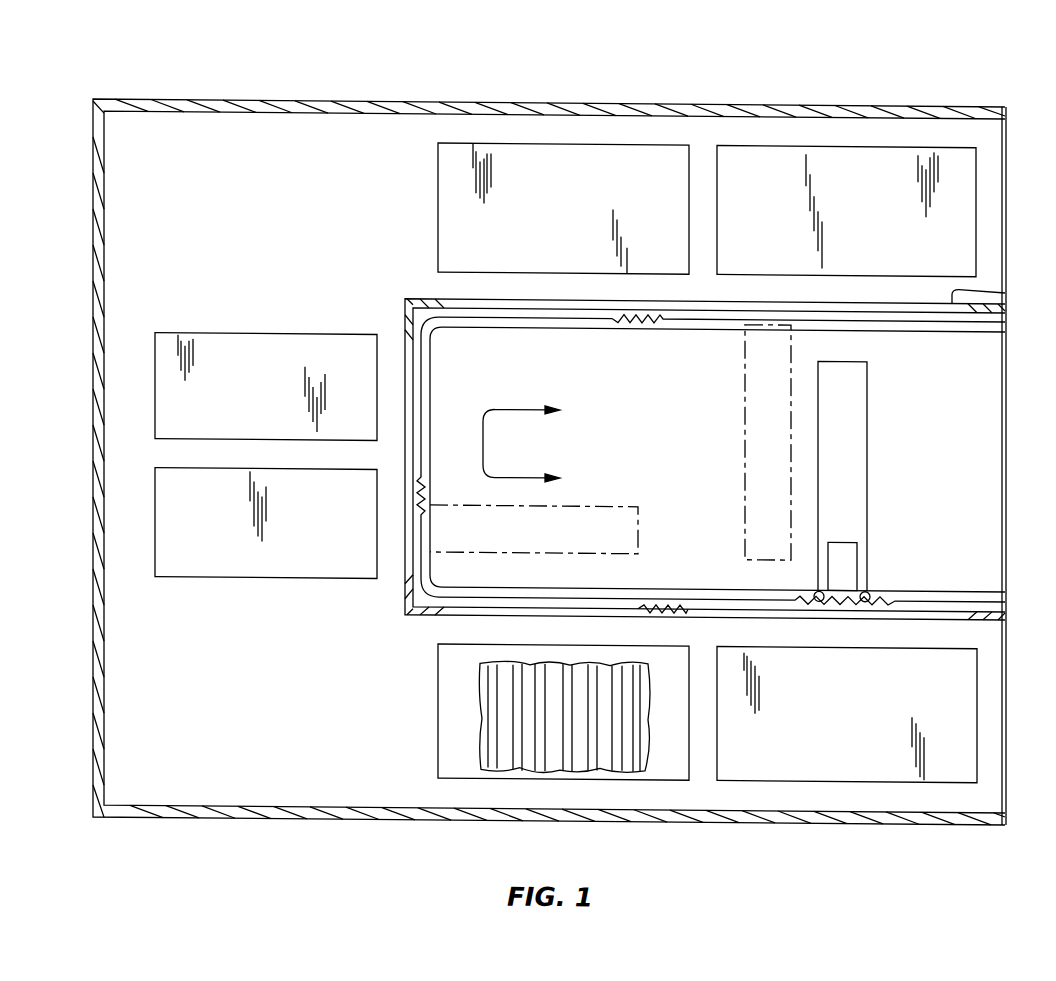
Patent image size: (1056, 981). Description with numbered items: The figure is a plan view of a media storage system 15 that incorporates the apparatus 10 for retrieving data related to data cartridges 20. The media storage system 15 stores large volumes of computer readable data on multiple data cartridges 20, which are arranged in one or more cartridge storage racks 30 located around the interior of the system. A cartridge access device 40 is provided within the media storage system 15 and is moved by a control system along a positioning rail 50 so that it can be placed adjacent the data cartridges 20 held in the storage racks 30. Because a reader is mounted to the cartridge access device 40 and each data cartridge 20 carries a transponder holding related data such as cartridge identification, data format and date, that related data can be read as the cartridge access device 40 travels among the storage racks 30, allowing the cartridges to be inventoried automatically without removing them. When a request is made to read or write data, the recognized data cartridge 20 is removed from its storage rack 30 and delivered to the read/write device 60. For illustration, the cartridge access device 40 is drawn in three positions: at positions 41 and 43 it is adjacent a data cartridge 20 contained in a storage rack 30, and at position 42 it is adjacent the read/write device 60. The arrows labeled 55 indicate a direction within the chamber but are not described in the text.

The apparatus 10 is at (931, 82).
The media storage system 15 is at (199, 99).
The data cartridge 20 is at (528, 768).
The cartridge storage rack 30 is at (738, 140).
The cartridge access device 40 is at (873, 466).
The position 41 is at (867, 381).
The position 42 is at (610, 502).
The position 43 is at (745, 374).
The positioning rail 50 is at (978, 584).
The air flow 55 is at (483, 440).
The read/write device 60 is at (183, 467).